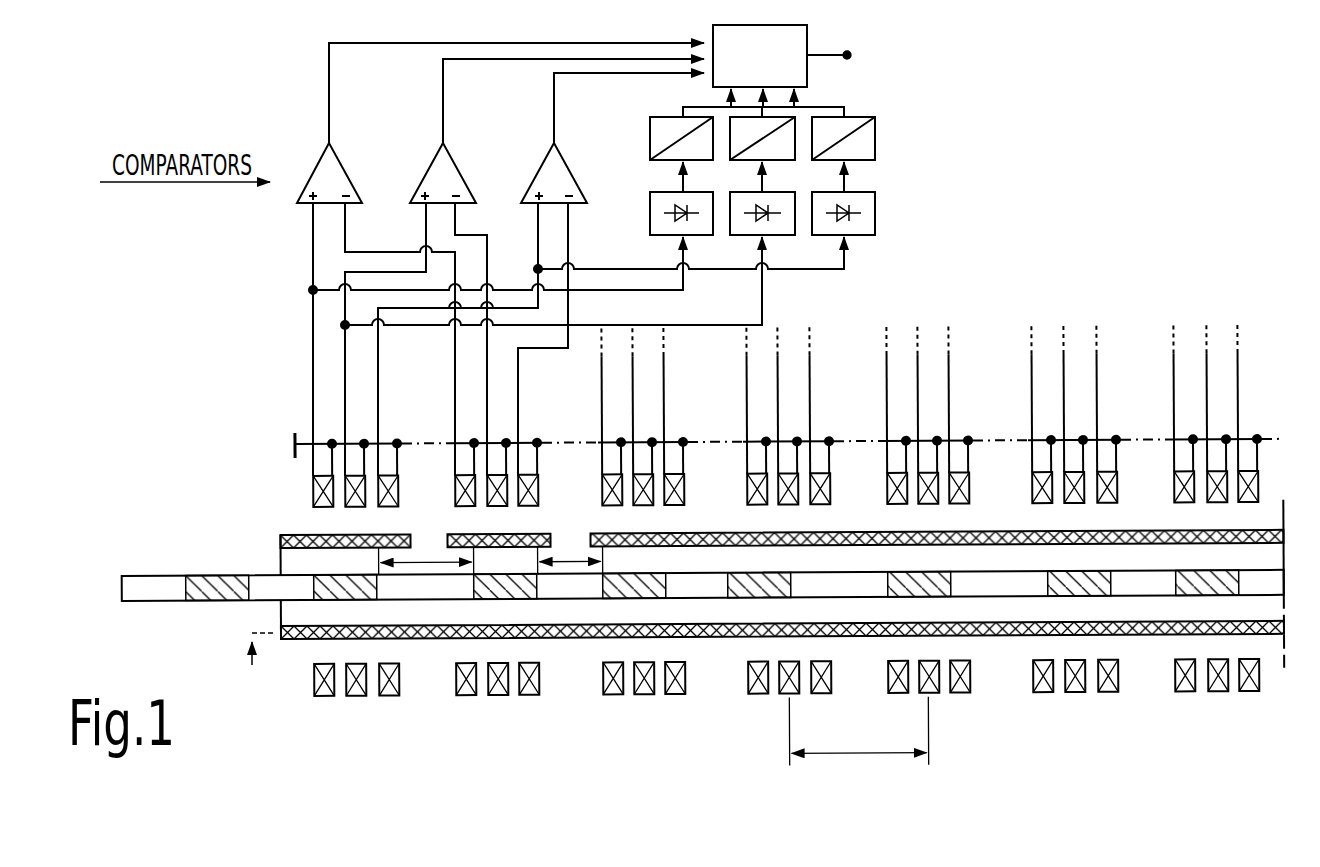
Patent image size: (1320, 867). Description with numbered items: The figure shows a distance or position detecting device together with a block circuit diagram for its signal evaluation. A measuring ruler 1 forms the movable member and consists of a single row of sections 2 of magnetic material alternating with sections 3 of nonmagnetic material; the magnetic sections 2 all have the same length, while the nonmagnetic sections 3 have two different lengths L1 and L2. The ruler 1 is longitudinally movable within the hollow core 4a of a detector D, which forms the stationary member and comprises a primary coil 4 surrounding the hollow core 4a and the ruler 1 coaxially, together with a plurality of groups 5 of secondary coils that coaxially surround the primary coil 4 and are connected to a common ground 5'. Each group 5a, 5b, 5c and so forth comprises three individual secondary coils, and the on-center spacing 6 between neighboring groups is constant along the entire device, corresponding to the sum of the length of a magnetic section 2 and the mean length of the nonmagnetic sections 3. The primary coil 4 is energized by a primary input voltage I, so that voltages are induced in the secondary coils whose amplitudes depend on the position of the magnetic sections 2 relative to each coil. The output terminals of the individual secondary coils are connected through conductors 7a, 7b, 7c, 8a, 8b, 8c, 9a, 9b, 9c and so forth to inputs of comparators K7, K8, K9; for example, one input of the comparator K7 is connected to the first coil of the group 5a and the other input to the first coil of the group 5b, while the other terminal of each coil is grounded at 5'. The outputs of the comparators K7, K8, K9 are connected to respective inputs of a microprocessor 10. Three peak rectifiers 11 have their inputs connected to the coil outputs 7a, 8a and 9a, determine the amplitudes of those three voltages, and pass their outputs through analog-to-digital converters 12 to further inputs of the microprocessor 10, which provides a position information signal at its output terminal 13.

The measuring ruler 1 is at (674, 534).
The sections of magnetic material 2 is at (212, 573).
The sections of nonmagnetic material 3 is at (155, 582).
The primary coil 4 is at (278, 538).
The hollow core 4a is at (298, 612).
The groups of secondary coils 5 is at (1252, 386).
The common ground 5' is at (261, 467).
The first secondary coil group 5a is at (400, 708).
The second secondary coil group 5b is at (543, 708).
The third secondary coil group 5c is at (687, 708).
The on-center spacing 6 is at (858, 731).
The conductor 7a is at (313, 358).
The conductor 8a is at (345, 389).
The conductor 9a is at (378, 420).
The conductor 7b is at (455, 358).
The conductor 8b is at (487, 389).
The conductor 9b is at (518, 420).
The conductor 7c is at (602, 353).
The conductor 8c is at (633, 385).
The conductor 9c is at (664, 415).
The microprocessor 10 is at (807, 73).
The peak rectifiers 11 is at (1152, 218).
The analog-to-digital converters 12 is at (1190, 145).
The output terminal 13 is at (847, 55).
The comparator K7 is at (323, 156).
The comparator K8 is at (437, 156).
The comparator K9 is at (548, 156).
The detector D is at (1200, 306).
The length of nonmagnetic section L1 is at (425, 551).
The length of nonmagnetic section L2 is at (569, 550).
The primary input voltage I is at (255, 668).